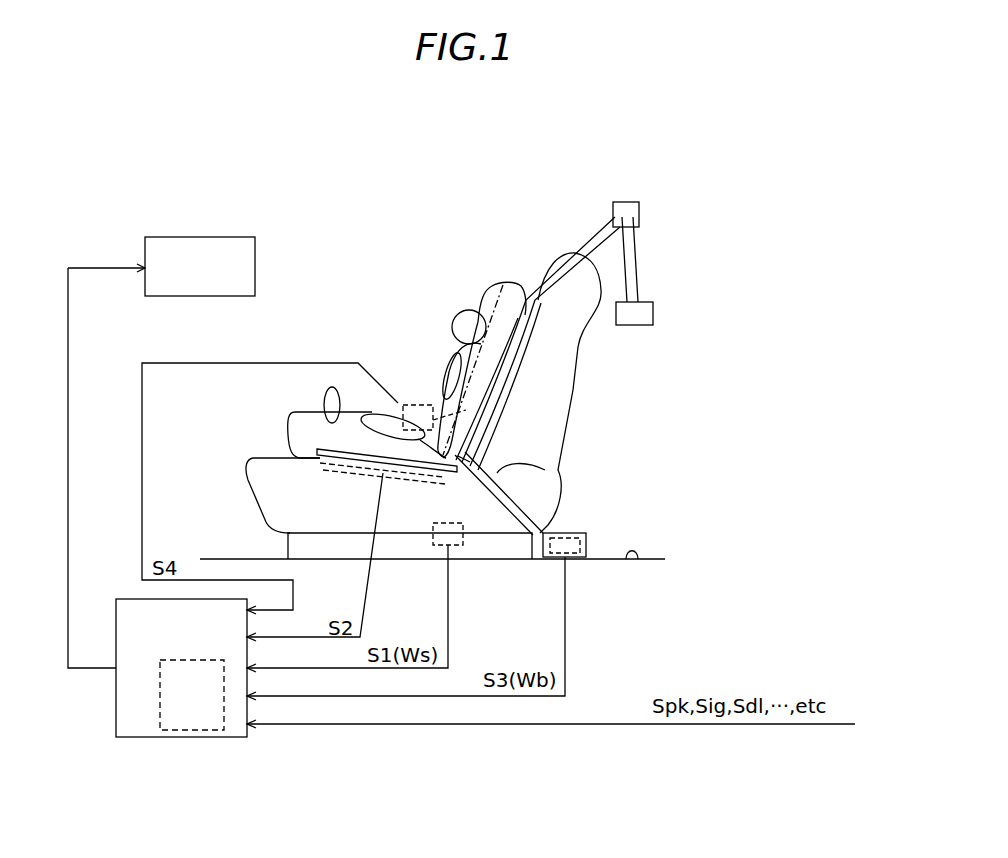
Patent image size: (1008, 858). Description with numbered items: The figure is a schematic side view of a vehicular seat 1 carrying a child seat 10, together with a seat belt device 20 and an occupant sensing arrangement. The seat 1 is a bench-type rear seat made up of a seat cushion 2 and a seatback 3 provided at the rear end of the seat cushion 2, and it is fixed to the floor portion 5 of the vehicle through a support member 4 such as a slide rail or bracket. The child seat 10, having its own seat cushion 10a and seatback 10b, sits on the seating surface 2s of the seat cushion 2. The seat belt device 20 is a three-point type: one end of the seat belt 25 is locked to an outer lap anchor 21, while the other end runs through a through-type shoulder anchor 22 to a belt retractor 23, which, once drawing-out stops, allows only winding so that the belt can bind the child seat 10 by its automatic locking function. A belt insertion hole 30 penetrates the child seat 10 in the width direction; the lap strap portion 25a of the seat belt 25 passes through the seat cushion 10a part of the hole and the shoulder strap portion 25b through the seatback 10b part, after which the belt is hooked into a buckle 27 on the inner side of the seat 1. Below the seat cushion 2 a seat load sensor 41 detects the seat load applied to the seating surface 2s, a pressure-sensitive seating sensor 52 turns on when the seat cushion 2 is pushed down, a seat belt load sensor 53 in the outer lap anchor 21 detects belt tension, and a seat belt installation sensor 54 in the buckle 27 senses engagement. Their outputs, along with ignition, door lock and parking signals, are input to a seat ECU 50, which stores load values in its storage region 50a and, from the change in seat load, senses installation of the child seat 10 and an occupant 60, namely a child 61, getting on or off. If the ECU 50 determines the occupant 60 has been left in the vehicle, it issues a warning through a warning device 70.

The vehicular seat 1 is at (566, 258).
The seat cushion 2 is at (268, 480).
The seating surface 2s is at (280, 452).
The seatback 3 is at (575, 393).
The support member 4 is at (288, 545).
The floor portion 5 is at (632, 563).
The child seat 10 is at (363, 347).
The seat cushion 10a is at (293, 412).
The seatback 10b is at (487, 295).
The seat belt device 20 is at (686, 382).
The outer lap anchor 21 is at (588, 531).
The shoulder anchor 22 is at (641, 213).
The belt retractor 23 is at (654, 302).
The seat belt 25 is at (569, 376).
The lap strap portion 25a is at (535, 477).
The shoulder strap portion 25b is at (553, 303).
The buckle 27 is at (497, 437).
The belt insertion hole 30 is at (483, 395).
The seat load sensor 41 is at (433, 520).
The seat ECU 50 is at (118, 600).
The storage region 50a is at (160, 712).
The seating sensor 52 is at (317, 472).
The seat belt load sensor 53 is at (553, 559).
The seat belt installation sensor 54 is at (505, 440).
The occupant 60 is at (386, 320).
The child 61 is at (422, 335).
The warning device 70 is at (257, 236).